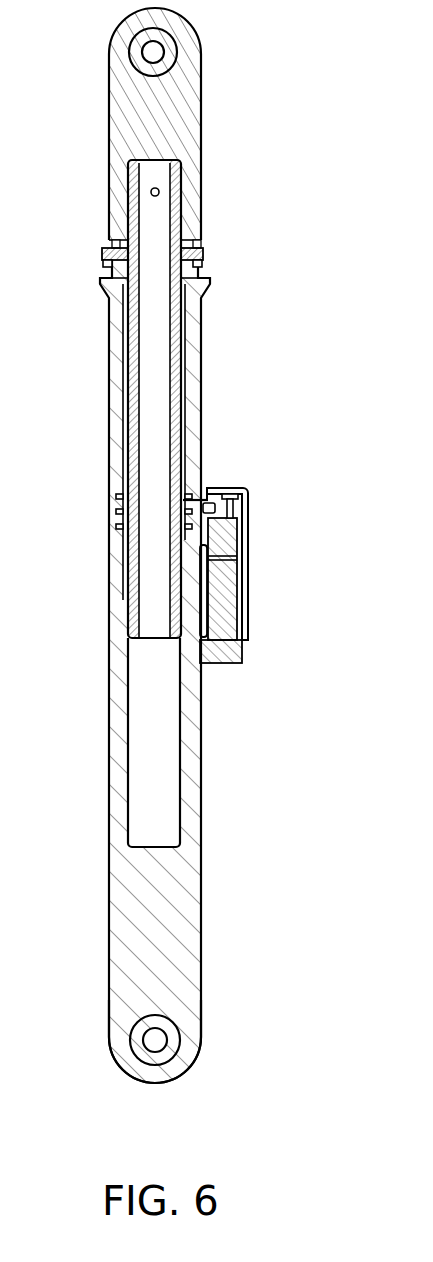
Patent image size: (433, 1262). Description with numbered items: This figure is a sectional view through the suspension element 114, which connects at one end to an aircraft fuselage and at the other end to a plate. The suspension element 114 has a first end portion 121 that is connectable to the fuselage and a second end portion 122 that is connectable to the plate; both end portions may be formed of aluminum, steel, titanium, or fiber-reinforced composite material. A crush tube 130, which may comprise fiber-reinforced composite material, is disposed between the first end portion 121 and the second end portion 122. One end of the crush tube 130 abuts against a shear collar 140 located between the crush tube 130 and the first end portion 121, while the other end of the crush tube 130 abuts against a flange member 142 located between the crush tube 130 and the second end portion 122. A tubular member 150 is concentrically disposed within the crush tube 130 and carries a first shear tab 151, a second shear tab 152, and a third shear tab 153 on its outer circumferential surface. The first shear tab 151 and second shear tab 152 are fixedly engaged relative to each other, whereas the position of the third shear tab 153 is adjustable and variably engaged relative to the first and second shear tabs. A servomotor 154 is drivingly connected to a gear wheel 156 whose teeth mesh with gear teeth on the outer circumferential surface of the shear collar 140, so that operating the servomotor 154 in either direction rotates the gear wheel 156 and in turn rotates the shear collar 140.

The suspension element 114 is at (283, 209).
The first end portion 121 is at (180, 1002).
The second end portion 122 is at (110, 63).
The crush tube 130 is at (113, 395).
The shear collar 140 is at (208, 487).
The flange member 142 is at (113, 272).
The tubular member 150 is at (178, 408).
The first shear tab 151 is at (112, 527).
The second shear tab 152 is at (108, 510).
The third shear tab 153 is at (107, 495).
The servomotor 154 is at (228, 598).
The gear wheel 156 is at (233, 508).